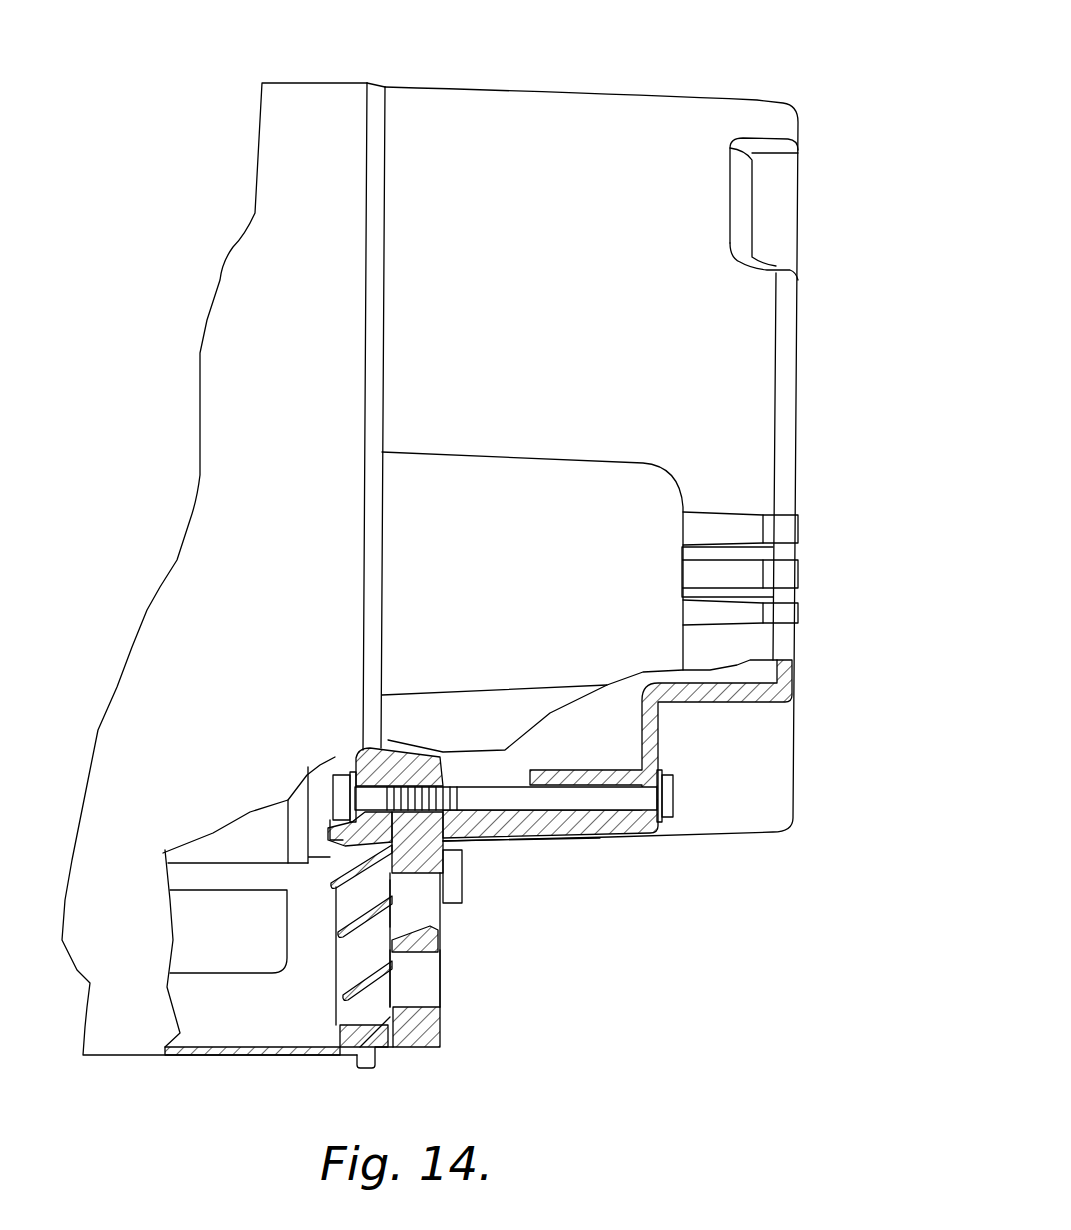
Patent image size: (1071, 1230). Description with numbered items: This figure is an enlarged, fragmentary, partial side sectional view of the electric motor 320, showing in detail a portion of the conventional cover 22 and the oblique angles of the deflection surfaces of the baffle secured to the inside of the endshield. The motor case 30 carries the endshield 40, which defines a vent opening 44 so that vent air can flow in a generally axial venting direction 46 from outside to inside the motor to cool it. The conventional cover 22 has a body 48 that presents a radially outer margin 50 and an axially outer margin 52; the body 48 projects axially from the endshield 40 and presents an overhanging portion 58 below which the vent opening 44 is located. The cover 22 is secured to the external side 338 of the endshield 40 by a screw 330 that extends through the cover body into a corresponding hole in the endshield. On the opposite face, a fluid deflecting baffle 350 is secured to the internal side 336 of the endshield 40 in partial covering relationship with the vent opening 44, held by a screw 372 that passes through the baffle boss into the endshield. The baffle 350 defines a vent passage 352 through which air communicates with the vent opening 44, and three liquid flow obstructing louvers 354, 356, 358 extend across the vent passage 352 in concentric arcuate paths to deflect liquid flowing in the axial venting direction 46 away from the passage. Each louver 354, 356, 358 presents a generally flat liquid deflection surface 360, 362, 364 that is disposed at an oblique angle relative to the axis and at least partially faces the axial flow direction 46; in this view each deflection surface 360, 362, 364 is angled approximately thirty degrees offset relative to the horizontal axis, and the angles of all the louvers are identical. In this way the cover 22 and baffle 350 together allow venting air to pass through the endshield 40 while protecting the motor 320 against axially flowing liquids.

The conventional cover 22 is at (682, 67).
The motor case 30 is at (233, 367).
The endshield 40 is at (393, 1038).
The vent opening 44 is at (412, 963).
The axial venting direction 46 is at (660, 969).
The body 48 is at (730, 308).
The radially outer margin 50 is at (421, 106).
The axially outer margin 52 is at (797, 392).
The overhanging portion 58 is at (740, 710).
The electric motor 320 is at (184, 177).
The screw 330 is at (667, 790).
The internal side 336 is at (390, 943).
The external side 338 is at (440, 945).
The fluid deflecting baffle 350 is at (328, 855).
The vent passage 352 is at (380, 890).
The louver 354 is at (330, 872).
The louver 356 is at (350, 918).
The louver 358 is at (350, 973).
The liquid deflection surface 360 is at (378, 860).
The liquid deflection surface 362 is at (392, 907).
The liquid deflection surface 364 is at (367, 973).
The screw 372 is at (340, 785).